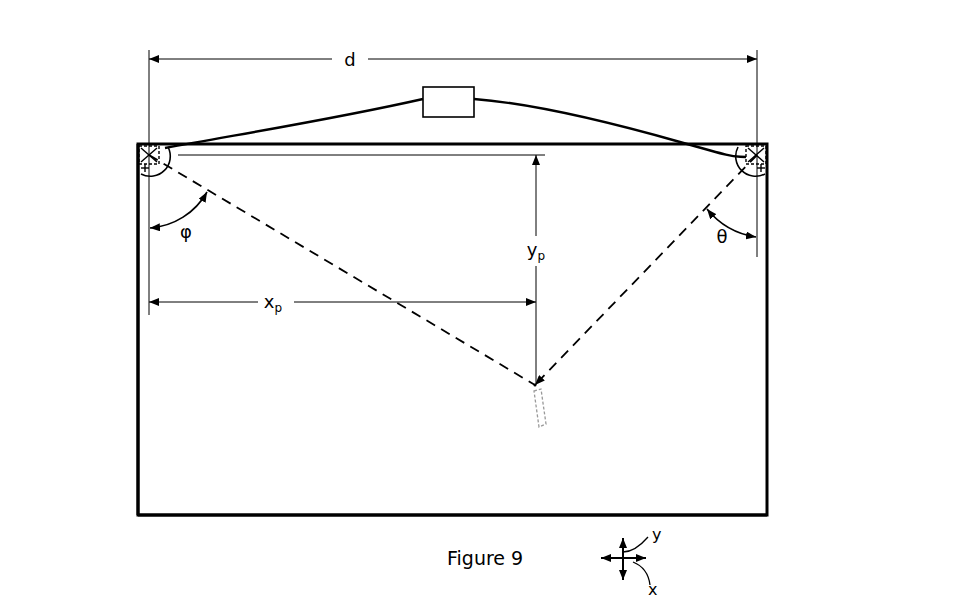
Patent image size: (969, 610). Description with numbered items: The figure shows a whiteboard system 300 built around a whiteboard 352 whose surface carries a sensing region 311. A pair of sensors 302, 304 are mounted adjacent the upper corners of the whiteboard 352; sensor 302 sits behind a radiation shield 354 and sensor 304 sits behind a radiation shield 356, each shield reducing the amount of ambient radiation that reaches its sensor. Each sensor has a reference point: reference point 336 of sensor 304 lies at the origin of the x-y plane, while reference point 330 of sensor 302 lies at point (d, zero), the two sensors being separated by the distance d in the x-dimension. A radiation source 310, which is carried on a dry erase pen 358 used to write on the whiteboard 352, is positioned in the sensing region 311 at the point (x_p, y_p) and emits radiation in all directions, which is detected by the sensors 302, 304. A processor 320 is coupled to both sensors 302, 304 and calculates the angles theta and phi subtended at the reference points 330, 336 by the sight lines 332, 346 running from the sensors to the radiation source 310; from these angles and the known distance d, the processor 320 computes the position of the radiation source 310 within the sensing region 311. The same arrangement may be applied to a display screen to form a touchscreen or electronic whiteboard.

The whiteboard system 300 is at (278, 534).
The sensor 302 is at (763, 157).
The sensor 304 is at (142, 156).
The radiation source 310 is at (538, 388).
The sensing region 311 is at (452, 335).
The processor 320 is at (455, 122).
The reference point 330 is at (758, 154).
The first sight line 332 is at (580, 342).
The reference point 336 is at (150, 152).
The second sight line 346 is at (340, 268).
The whiteboard 352 is at (158, 457).
The radiation shield 354 is at (765, 167).
The radiation shield 356 is at (142, 168).
The dry erase pen 358 is at (537, 412).